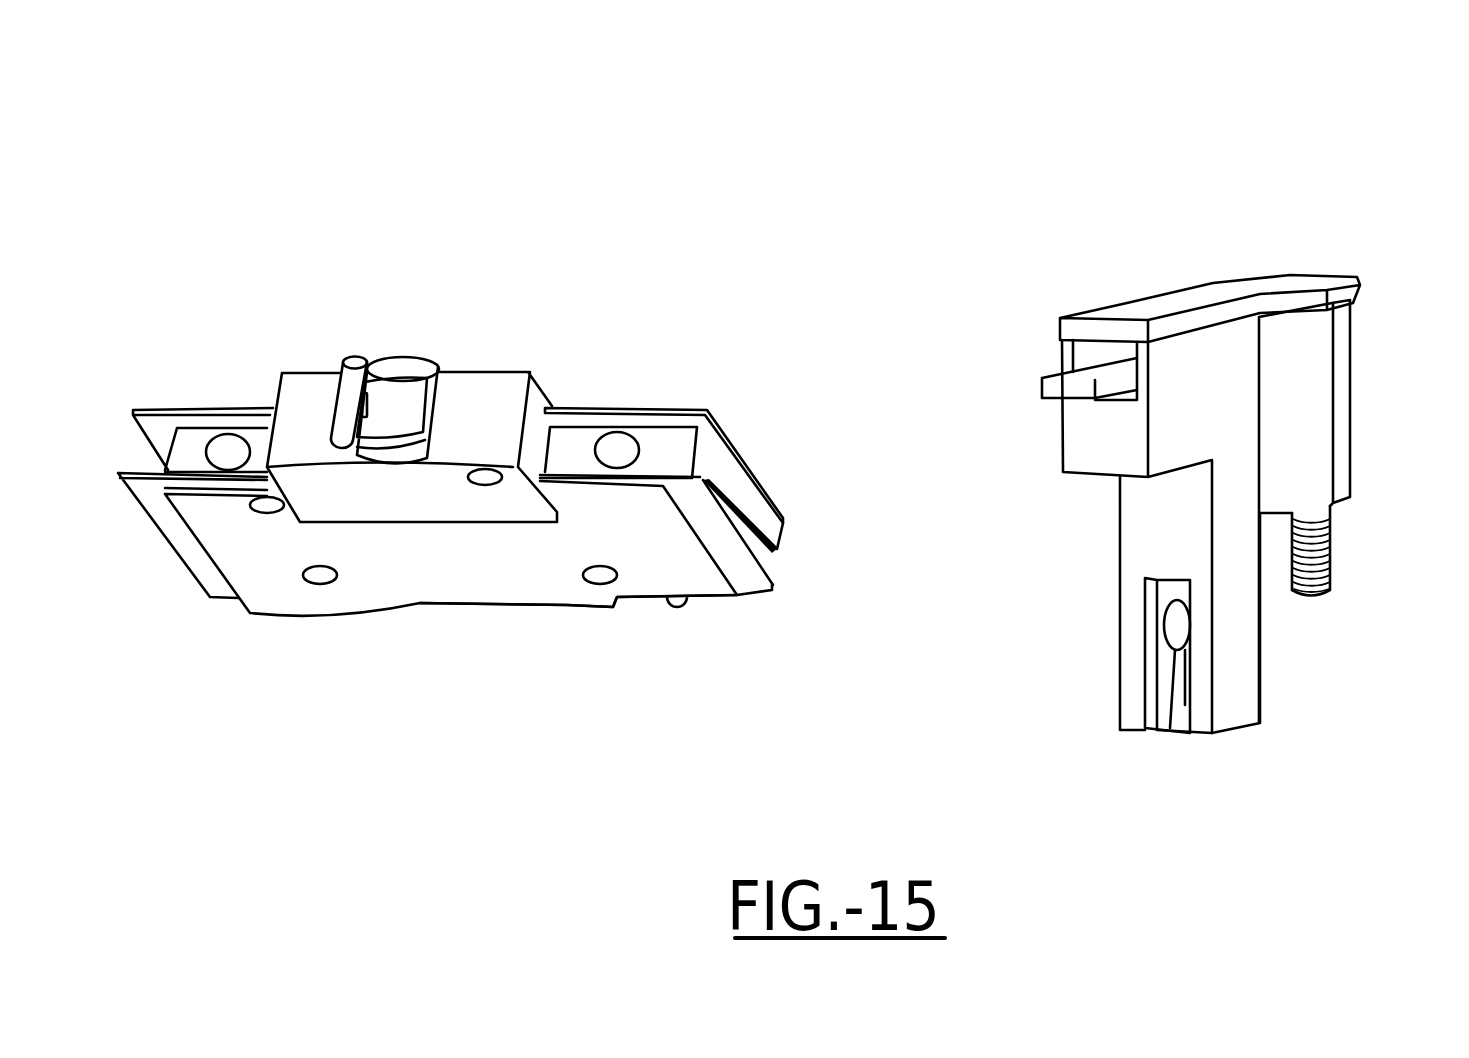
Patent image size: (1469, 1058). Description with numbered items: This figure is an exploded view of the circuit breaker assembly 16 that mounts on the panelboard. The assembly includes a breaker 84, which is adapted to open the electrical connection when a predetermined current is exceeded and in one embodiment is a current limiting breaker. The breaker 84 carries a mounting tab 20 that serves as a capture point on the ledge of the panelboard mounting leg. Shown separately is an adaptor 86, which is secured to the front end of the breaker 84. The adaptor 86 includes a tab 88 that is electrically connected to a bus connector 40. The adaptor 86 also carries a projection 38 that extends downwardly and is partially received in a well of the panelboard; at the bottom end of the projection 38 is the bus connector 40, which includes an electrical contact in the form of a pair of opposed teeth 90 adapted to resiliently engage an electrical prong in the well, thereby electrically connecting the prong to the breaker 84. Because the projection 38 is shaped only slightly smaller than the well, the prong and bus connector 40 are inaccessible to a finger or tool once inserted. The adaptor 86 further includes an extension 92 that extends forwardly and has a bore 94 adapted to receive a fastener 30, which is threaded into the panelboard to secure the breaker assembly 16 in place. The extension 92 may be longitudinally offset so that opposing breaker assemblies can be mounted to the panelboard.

The breaker assembly 16 is at (450, 405).
The mounting tab 20 is at (567, 607).
The breaker 84 is at (466, 565).
The adaptor 86 is at (1226, 487).
The tab 88 is at (1043, 385).
The bore 94 is at (1307, 282).
The extension 92 is at (1302, 383).
The projection 38 is at (1155, 525).
The bus connector 40 is at (1121, 699).
The teeth 90 is at (1172, 712).
The fastener 30 is at (1333, 548).